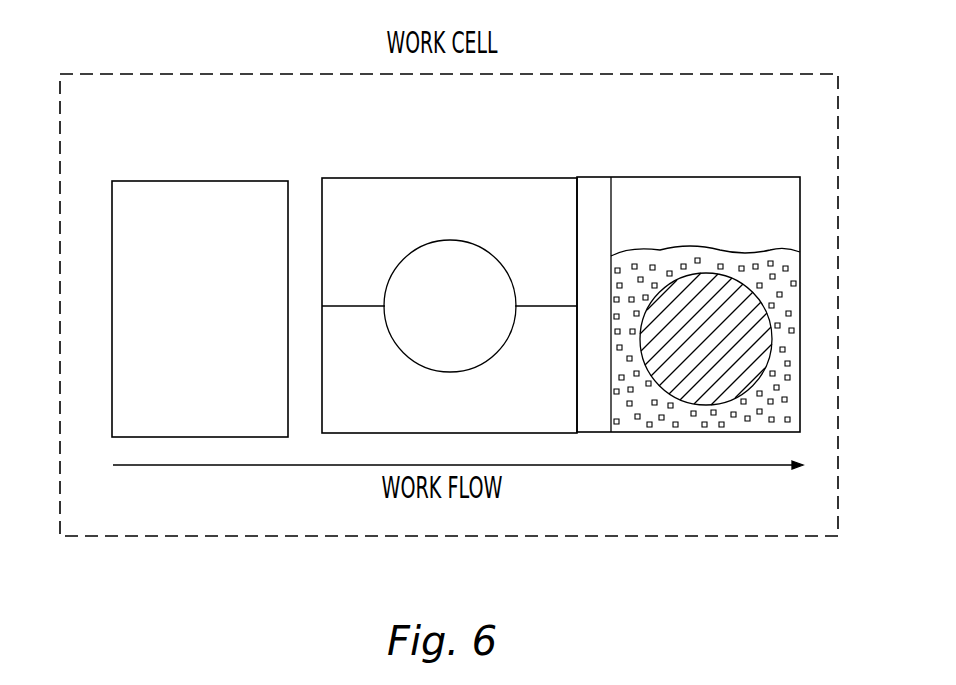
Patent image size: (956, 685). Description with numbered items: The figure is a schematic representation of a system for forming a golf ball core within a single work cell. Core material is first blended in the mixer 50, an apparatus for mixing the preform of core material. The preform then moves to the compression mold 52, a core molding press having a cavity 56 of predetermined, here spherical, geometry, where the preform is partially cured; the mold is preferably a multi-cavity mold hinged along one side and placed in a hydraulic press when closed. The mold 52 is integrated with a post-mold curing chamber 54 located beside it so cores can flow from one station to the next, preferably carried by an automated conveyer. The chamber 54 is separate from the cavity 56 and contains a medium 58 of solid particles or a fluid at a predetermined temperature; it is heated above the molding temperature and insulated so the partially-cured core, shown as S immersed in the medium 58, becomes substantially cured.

The mixer 50 is at (196, 181).
The compression mold 52 is at (431, 178).
The post-mold curing chamber 54 is at (695, 177).
The cavity 56 is at (397, 337).
The medium 58 is at (797, 307).
The product / sample S is at (760, 350).